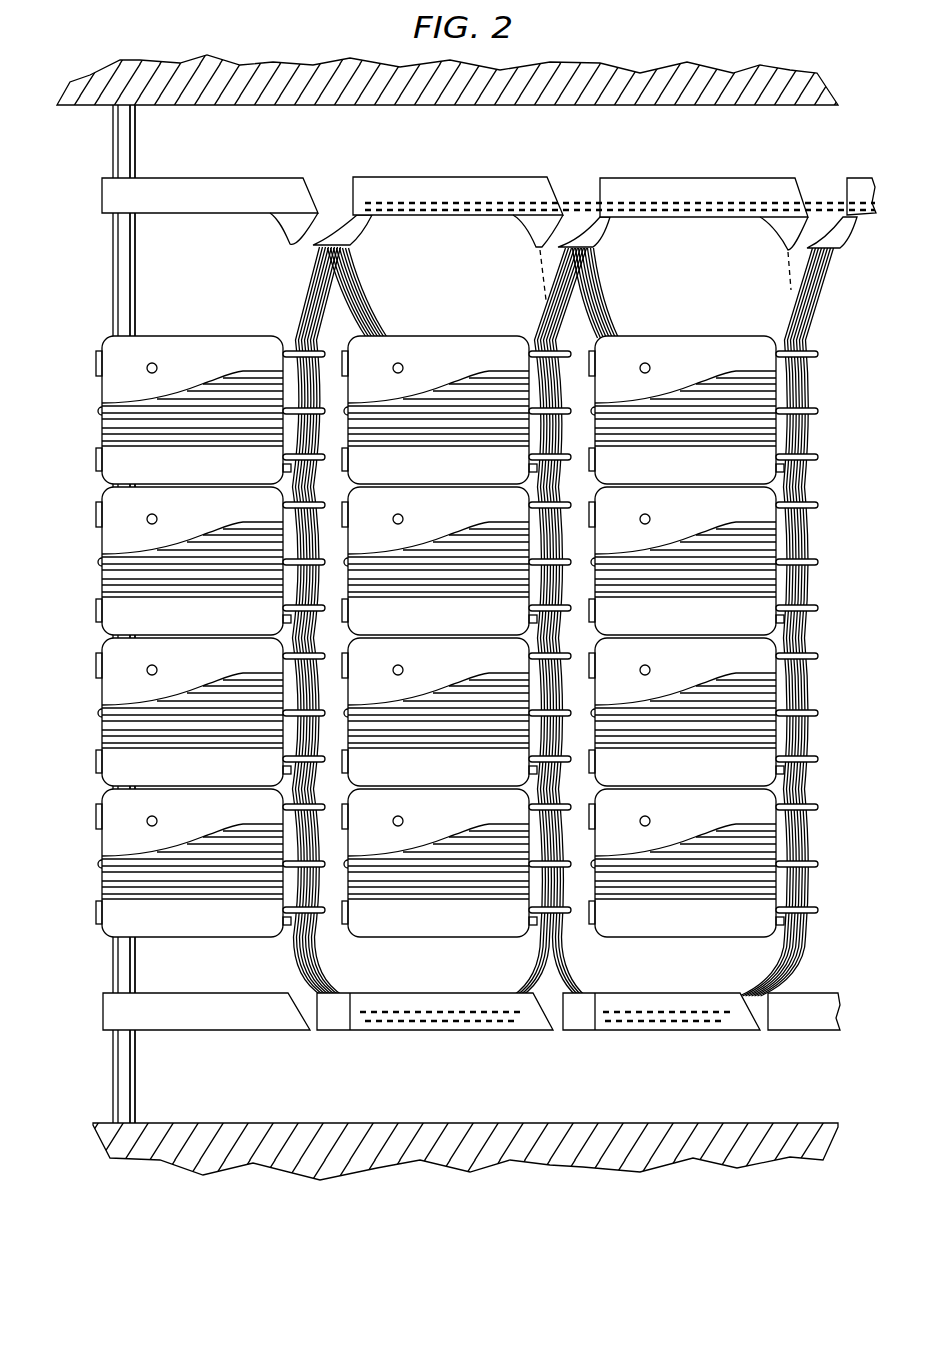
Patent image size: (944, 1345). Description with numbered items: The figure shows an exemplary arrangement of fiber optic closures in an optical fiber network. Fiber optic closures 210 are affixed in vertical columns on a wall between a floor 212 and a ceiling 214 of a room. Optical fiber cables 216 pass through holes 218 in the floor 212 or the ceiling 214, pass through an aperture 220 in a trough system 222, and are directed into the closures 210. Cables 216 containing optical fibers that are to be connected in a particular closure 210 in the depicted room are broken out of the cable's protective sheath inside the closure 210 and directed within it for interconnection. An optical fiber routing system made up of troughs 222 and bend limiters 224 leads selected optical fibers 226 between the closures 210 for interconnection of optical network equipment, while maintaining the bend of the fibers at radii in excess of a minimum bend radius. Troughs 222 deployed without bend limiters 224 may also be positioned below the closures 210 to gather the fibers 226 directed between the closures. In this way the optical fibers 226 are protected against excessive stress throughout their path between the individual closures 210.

The fiber optic closure 210 is at (102, 548).
The floor 212 is at (105, 1123).
The ceiling 214 is at (80, 107).
The optical fiber cable 216 is at (136, 147).
The hole 218 is at (112, 112).
The aperture 220 is at (107, 220).
The trough 222 is at (293, 178).
The bend limiter 224 is at (280, 227).
The optical fiber 226 is at (350, 273).